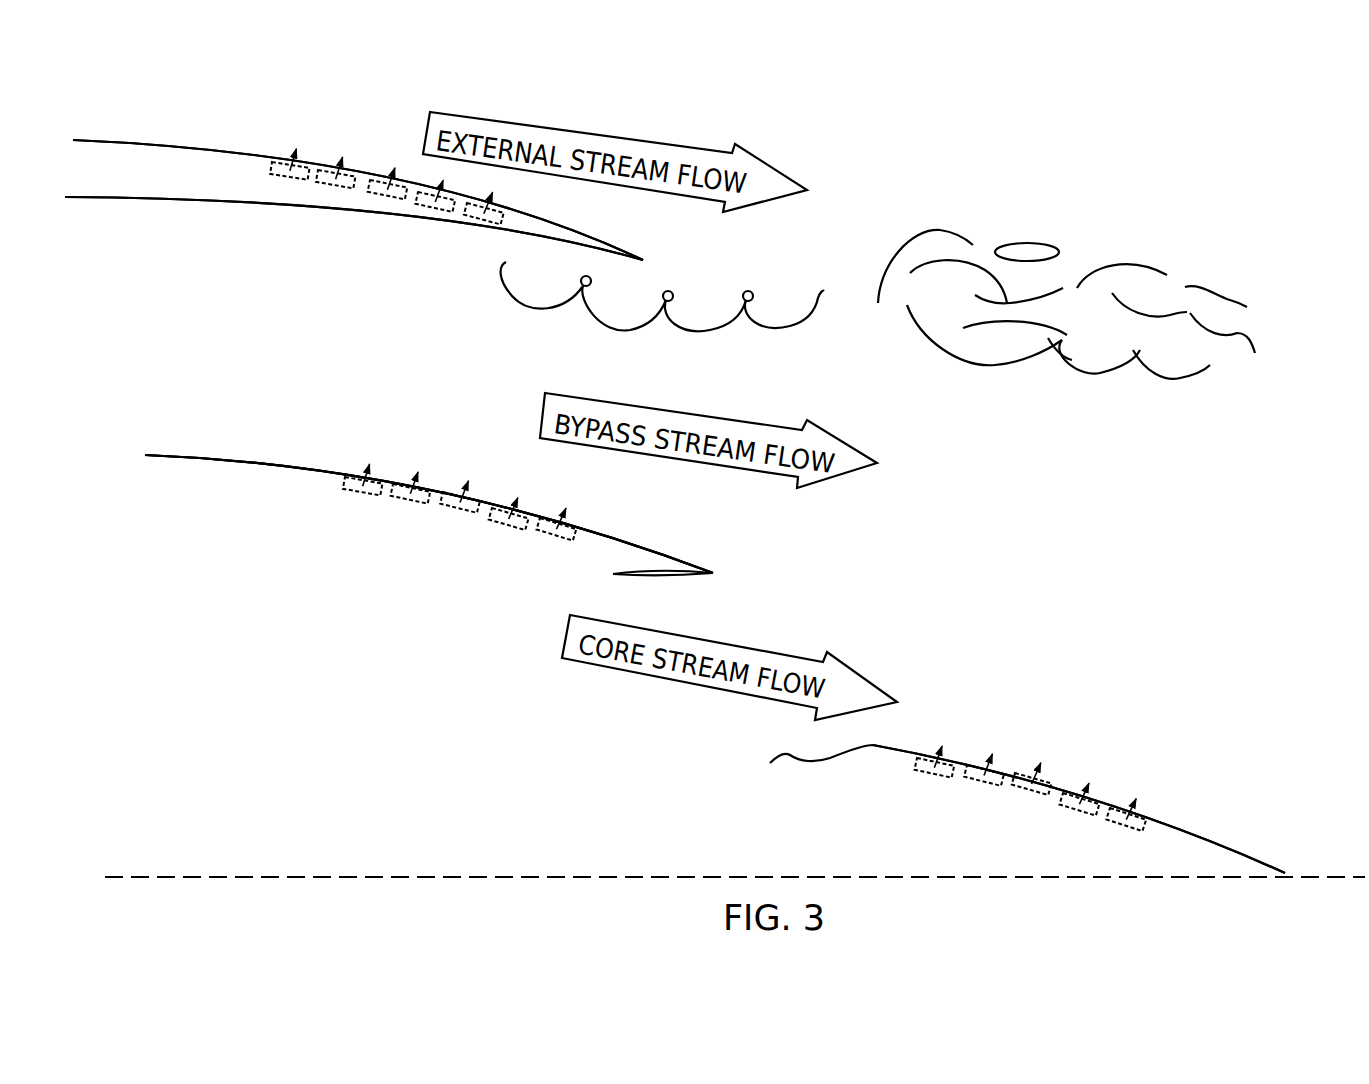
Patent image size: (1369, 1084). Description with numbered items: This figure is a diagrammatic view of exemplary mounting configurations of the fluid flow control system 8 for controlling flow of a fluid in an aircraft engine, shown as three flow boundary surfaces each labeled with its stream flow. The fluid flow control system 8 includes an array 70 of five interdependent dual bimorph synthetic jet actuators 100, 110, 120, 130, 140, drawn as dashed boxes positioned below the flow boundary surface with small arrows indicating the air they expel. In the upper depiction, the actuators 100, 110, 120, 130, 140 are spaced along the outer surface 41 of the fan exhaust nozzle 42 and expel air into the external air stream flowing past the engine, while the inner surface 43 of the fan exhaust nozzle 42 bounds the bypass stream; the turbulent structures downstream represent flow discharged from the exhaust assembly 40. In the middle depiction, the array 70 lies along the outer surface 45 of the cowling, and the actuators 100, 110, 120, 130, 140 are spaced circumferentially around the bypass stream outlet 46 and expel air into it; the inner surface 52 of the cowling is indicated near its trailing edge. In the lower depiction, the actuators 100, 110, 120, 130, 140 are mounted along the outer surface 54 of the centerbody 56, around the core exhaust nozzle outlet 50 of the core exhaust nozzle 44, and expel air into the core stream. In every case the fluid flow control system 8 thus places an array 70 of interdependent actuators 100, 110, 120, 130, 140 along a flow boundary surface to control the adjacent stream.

The fluid flow control system 8 is at (250, 169).
The exhaust assembly 40 is at (932, 180).
The outer surface of fan exhaust nozzle 41 is at (182, 145).
The fan exhaust nozzle 42 is at (157, 143).
The inner surface of fan exhaust nozzle 43 is at (132, 198).
The core exhaust nozzle 44 is at (207, 457).
The outer surface of cowling 45 is at (255, 462).
The bypass stream outlet 46 is at (365, 423).
The core exhaust nozzle outlet 50 is at (951, 720).
The inner surface of cowling 52 is at (692, 578).
The outer surface of centerbody 54 is at (440, 492).
The centerbody 56 is at (1187, 828).
The array of interdependent actuators 70 is at (323, 145).
The interdependent actuator 100 is at (287, 180).
The interdependent actuator 110 is at (337, 188).
The interdependent actuator 120 is at (383, 200).
The interdependent actuator 130 is at (437, 208).
The interdependent actuator 140 is at (483, 218).